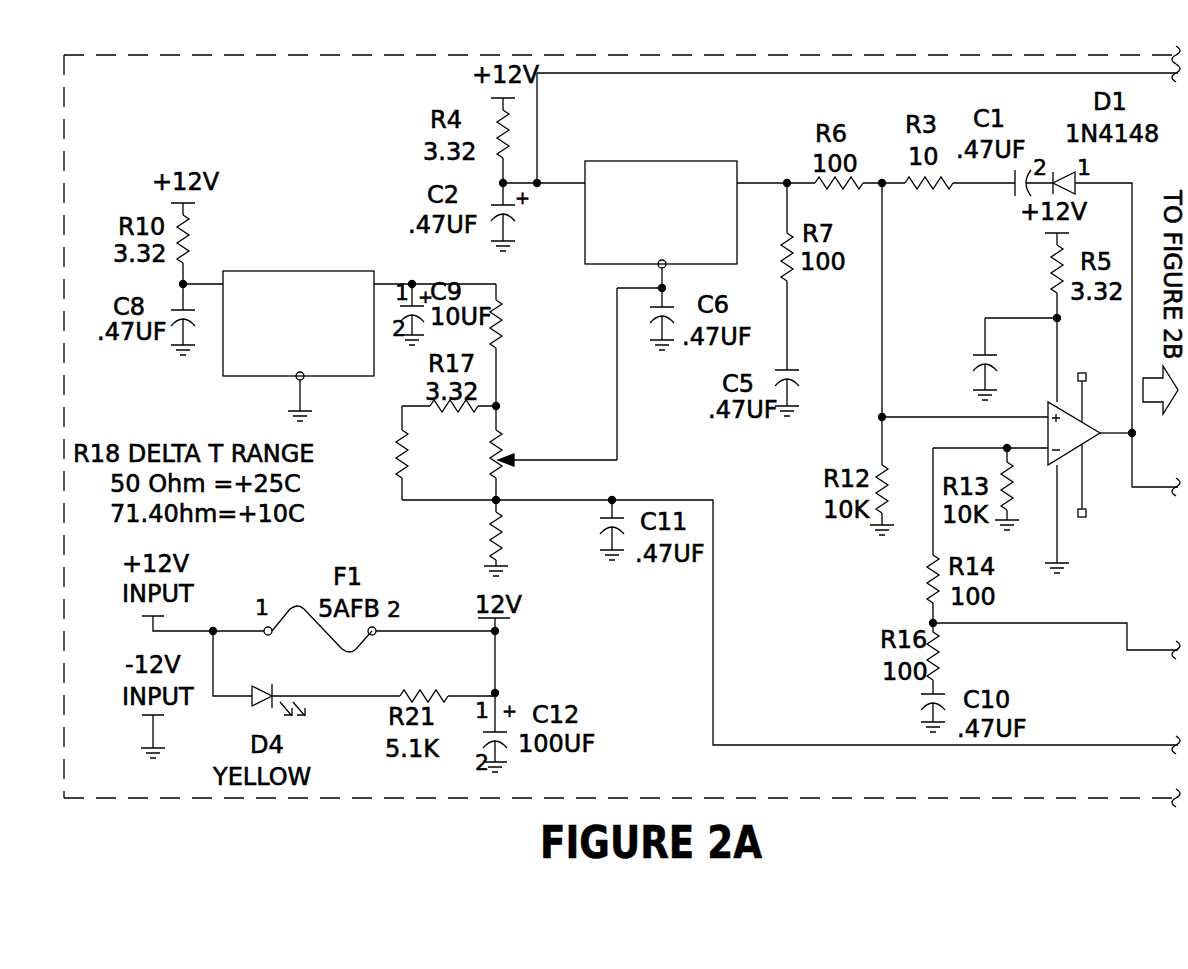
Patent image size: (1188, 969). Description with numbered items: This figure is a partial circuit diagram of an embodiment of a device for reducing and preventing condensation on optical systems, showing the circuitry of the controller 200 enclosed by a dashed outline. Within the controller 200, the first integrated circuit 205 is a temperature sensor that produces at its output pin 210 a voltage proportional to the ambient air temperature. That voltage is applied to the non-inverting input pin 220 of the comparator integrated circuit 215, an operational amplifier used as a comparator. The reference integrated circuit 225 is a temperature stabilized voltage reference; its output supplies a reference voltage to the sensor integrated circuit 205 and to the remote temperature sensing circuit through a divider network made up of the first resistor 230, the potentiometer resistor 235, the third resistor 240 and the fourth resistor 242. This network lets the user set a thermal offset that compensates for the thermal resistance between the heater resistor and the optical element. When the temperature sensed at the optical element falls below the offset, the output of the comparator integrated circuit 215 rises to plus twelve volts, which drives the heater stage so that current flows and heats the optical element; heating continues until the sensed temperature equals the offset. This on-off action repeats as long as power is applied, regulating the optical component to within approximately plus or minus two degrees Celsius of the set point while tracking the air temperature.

The controller 200 is at (130, 817).
The integrated circuit U1 205 is at (647, 103).
The pin 2 210 is at (767, 167).
The integrated circuit U3 215 is at (1138, 515).
The pin 3 220 is at (1027, 395).
The integrated circuit U4 225 is at (301, 229).
The resistor R15 230 is at (570, 325).
The resistor R18 235 is at (555, 400).
The resistor R19 240 is at (339, 458).
The resistor R20 242 is at (432, 517).